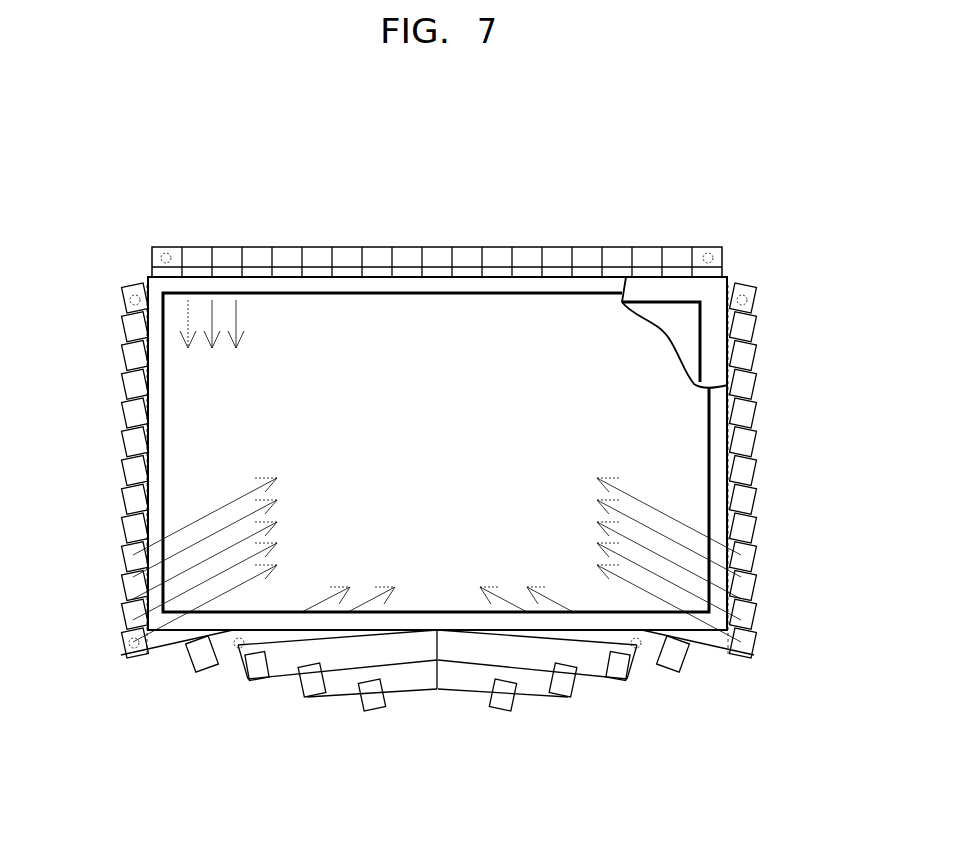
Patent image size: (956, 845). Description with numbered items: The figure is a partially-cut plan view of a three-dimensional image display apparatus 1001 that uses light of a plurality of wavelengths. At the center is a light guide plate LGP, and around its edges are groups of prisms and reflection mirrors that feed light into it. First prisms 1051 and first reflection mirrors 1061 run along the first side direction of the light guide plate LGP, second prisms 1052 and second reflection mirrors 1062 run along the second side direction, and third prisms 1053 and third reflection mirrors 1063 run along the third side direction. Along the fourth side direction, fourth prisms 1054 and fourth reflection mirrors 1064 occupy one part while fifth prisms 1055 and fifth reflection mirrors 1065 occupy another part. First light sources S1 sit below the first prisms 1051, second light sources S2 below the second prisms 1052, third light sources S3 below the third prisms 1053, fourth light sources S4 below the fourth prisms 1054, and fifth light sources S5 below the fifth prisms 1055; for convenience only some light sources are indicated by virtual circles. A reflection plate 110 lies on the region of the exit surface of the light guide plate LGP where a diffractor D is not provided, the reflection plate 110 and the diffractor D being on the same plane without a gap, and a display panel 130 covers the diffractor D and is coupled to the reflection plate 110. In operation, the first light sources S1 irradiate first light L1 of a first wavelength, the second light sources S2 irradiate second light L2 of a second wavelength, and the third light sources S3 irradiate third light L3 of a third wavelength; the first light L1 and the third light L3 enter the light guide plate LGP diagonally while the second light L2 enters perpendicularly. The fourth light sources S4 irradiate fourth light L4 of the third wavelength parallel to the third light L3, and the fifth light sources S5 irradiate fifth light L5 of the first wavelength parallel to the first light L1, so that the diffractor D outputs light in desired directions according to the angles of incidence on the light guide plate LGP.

The 3D image display apparatus 1001 is at (195, 185).
The reflection plate 110 is at (378, 288).
The display panel 130 is at (463, 340).
The second reflection mirrors 1062 is at (556, 258).
The second prisms 1052 is at (586, 275).
The diffractor D is at (670, 317).
The light guide plate LGP is at (713, 293).
The first reflection mirrors 1061 is at (130, 413).
The first prisms 1051 is at (130, 443).
The third prisms 1053 is at (744, 450).
The third reflection mirrors 1063 is at (750, 456).
The fifth prisms 1055 is at (290, 657).
The fifth reflection mirrors 1065 is at (253, 669).
The fourth prisms 1054 is at (468, 698).
The fourth reflection mirrors 1064 is at (512, 700).
The first light sources S1 is at (129, 298).
The second light sources S2 is at (165, 252).
The third light sources S3 is at (748, 300).
The fourth light sources S4 is at (638, 648).
The fifth light sources S5 is at (237, 648).
The first light L1 is at (222, 560).
The second light L2 is at (212, 338).
The third light L3 is at (651, 560).
The fourth light L4 is at (526, 582).
The fifth light L5 is at (348, 582).